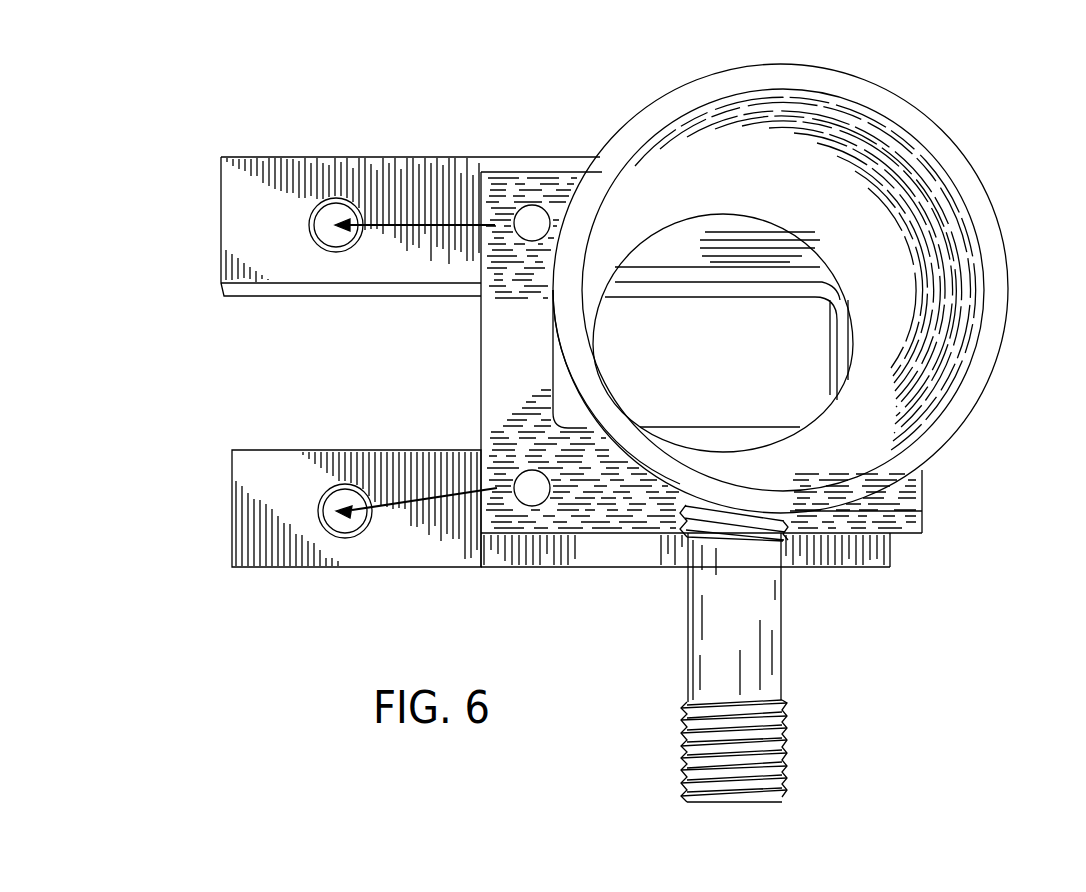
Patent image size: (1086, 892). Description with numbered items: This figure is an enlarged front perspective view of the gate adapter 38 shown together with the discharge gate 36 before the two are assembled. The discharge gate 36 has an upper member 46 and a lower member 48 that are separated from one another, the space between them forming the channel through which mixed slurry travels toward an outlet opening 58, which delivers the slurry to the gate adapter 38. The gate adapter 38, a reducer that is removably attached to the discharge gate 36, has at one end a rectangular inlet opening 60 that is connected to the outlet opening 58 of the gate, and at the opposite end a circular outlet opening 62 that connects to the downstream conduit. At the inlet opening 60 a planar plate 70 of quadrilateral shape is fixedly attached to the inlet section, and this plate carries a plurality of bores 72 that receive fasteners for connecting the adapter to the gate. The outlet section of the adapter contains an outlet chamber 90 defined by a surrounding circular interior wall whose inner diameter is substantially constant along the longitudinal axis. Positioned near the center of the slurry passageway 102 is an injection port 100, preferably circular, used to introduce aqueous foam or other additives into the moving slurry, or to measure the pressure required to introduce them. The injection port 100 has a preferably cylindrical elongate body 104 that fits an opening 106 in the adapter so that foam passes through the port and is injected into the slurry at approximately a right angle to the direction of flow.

The discharge gate 36 is at (277, 157).
The gate adapter 38 is at (650, 105).
The upper member 46 is at (244, 230).
The lower member 48 is at (258, 499).
The outlet opening 58 is at (383, 367).
The inlet opening 60 is at (785, 408).
The outlet opening 62 is at (908, 178).
The planar plate 70 is at (587, 515).
The bores 72 is at (533, 223).
The outlet chamber 90 is at (892, 408).
The injection port 100 is at (686, 686).
The slurry passageway 102 is at (883, 348).
The elongate body 104 is at (740, 645).
The opening 106 is at (676, 503).